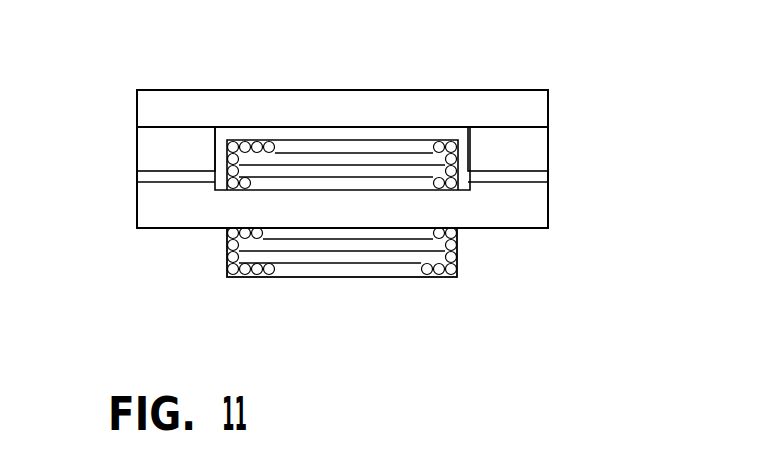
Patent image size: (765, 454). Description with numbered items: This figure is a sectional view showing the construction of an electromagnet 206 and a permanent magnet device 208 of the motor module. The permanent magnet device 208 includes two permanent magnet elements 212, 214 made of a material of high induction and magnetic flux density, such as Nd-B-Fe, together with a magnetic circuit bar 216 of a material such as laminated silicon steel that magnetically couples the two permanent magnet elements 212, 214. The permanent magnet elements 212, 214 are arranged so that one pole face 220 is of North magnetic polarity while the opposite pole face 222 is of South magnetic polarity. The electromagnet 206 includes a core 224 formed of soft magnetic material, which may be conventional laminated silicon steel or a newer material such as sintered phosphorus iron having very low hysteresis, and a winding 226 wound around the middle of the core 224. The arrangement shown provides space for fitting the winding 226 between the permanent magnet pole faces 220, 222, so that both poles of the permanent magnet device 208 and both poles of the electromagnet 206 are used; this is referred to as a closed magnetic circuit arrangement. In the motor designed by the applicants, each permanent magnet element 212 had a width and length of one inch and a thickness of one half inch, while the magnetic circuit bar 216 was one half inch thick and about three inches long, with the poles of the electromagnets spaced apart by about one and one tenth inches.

The electromagnet 206 is at (337, 287).
The permanent magnet device 208 is at (203, 90).
The permanent magnet element 212 is at (137, 142).
The permanent magnet element 214 is at (548, 140).
The magnetic circuit bar 216 is at (352, 90).
The pole face 220 is at (165, 172).
The pole face 222 is at (515, 173).
The core 224 is at (465, 229).
The winding 226 is at (425, 278).